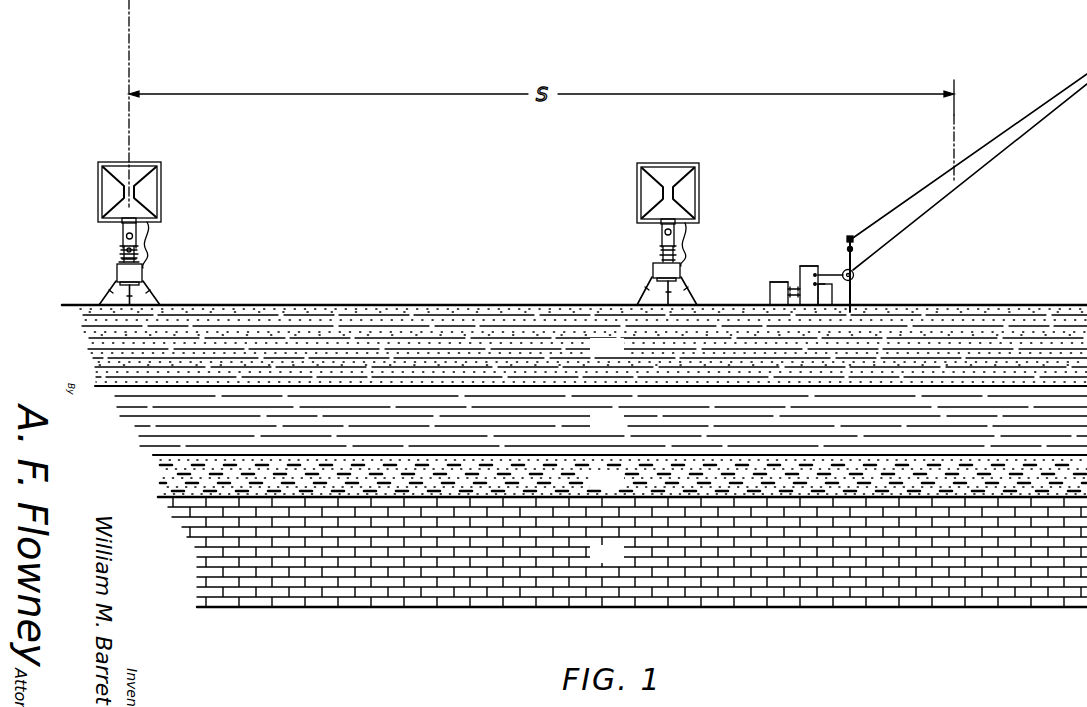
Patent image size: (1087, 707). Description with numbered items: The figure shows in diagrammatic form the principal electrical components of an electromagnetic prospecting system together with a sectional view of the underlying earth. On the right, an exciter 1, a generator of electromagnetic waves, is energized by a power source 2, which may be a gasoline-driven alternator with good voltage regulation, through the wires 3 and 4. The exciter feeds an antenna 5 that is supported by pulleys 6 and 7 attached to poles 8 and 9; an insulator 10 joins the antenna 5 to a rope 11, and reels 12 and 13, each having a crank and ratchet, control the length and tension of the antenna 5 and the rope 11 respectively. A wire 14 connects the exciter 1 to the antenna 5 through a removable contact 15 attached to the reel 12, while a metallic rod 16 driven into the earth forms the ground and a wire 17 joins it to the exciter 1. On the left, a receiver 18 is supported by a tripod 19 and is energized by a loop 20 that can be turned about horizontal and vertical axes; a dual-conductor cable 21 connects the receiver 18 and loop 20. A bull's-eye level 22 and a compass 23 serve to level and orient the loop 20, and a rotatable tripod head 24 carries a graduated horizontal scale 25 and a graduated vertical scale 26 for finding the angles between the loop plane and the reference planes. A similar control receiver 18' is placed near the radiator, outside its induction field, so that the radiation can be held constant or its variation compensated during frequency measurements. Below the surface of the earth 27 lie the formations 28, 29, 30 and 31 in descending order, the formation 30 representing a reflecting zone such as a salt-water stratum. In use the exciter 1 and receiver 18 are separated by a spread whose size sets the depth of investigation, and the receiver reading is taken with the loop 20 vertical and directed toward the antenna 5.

The exciter 1 is at (797, 284).
The power source 2 is at (770, 296).
The wire 3 is at (771, 283).
The wire 4 is at (789, 291).
The antenna 5 is at (925, 188).
The pulley 6 is at (848, 238).
The pulley 7 is at (1086, 38).
The pole 8 is at (852, 250).
The pole 9 is at (1082, 159).
The insulator 10 is at (1068, 89).
The rope 11 is at (1086, 65).
The reel 12 is at (855, 275).
The reel 13 is at (843, 270).
The wire 14 is at (800, 266).
The removable contact 15 is at (836, 272).
The metallic rod 16 is at (852, 300).
The wire 17 is at (832, 292).
The receiver 18 is at (169, 258).
The control receiver 18' is at (657, 234).
The tripod 19 is at (149, 283).
The loop 20 is at (161, 173).
The dual-conductor cable 21 is at (146, 242).
The bull's-eye level 22 is at (126, 219).
The compass 23 is at (131, 221).
The rotatable tripod head 24 is at (119, 256).
The graduated horizontal scale 25 is at (121, 250).
The graduated vertical scale 26 is at (123, 238).
The surface of the earth 27 is at (352, 305).
The formation 28 is at (581, 347).
The formation 29 is at (601, 425).
The formation 30 is at (622, 478).
The formation 31 is at (622, 552).